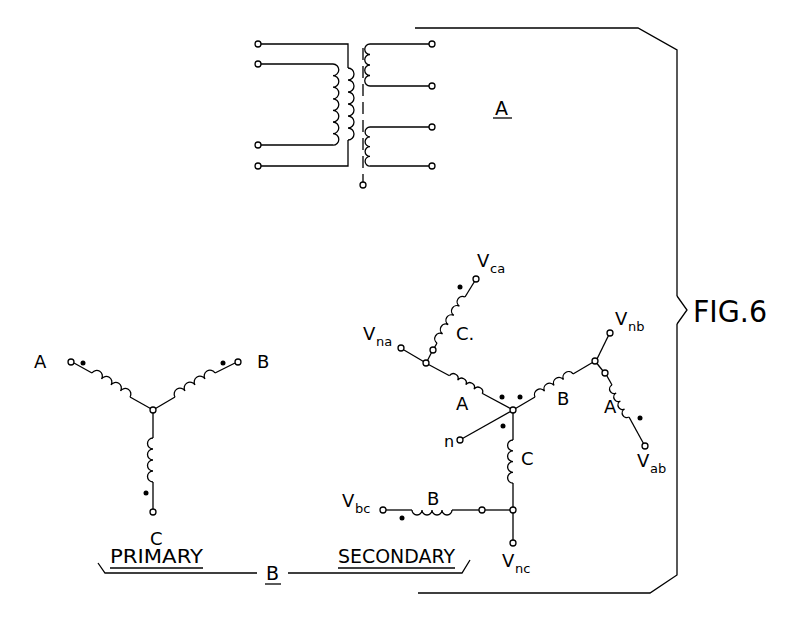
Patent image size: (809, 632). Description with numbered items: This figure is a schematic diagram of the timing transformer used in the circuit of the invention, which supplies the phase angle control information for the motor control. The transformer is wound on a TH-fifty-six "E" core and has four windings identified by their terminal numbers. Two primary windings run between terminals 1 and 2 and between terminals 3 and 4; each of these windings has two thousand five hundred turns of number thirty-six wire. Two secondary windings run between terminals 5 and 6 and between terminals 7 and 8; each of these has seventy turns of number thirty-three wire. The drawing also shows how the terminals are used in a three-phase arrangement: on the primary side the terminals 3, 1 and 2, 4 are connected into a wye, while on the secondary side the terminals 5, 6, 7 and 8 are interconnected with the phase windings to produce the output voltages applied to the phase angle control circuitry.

The winding terminal 1 is at (287, 99).
The winding terminal 2 is at (248, 280).
The winding terminal 3 is at (202, 277).
The winding terminal 4 is at (291, 158).
The winding terminal 5 is at (451, 237).
The winding terminal 6 is at (484, 298).
The winding terminal 7 is at (514, 326).
The winding terminal 8 is at (495, 346).